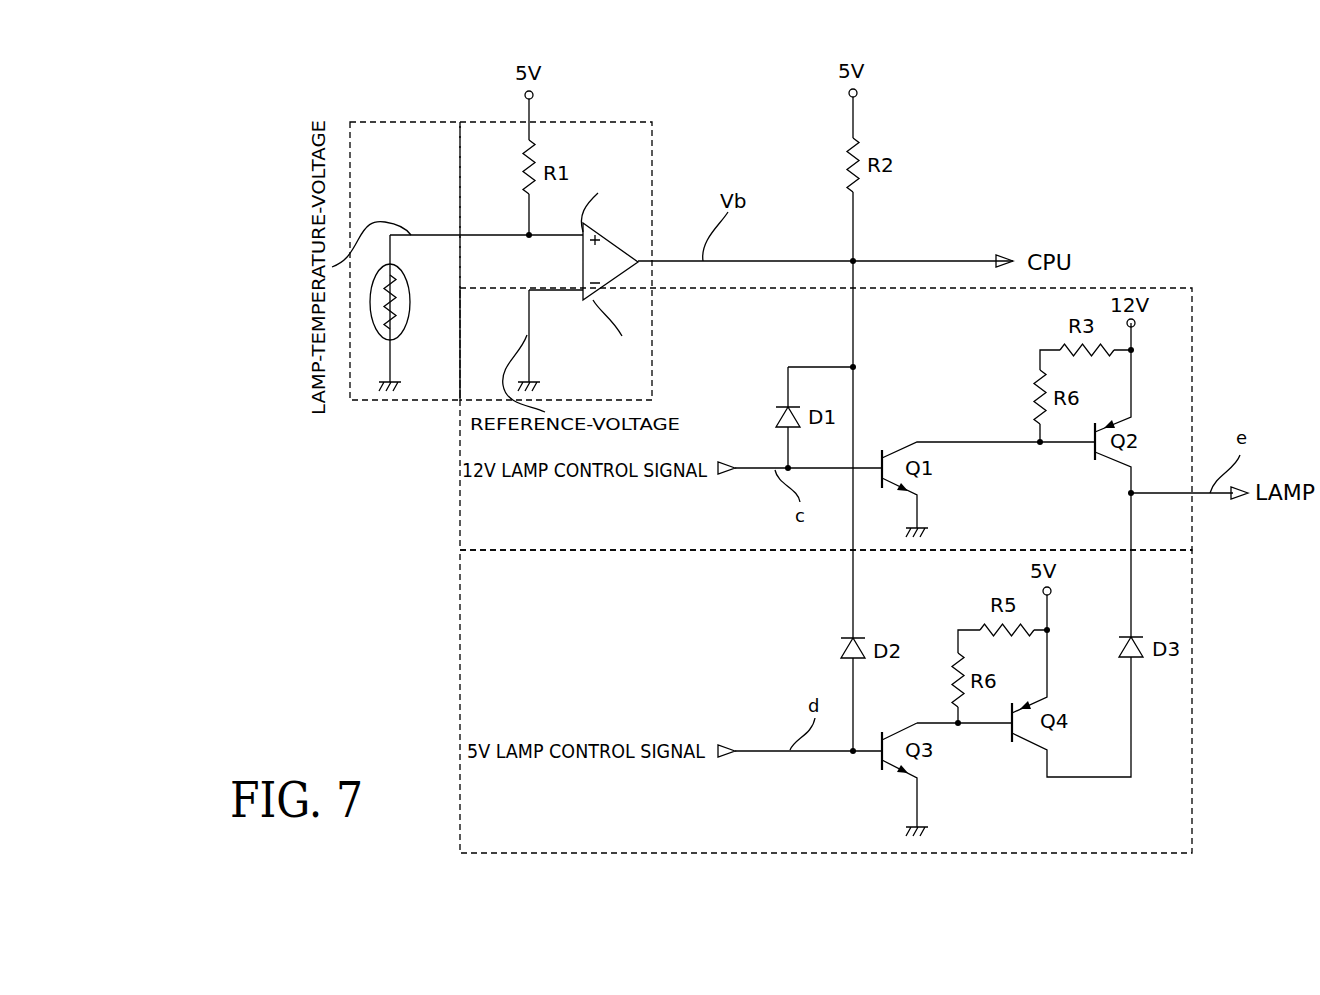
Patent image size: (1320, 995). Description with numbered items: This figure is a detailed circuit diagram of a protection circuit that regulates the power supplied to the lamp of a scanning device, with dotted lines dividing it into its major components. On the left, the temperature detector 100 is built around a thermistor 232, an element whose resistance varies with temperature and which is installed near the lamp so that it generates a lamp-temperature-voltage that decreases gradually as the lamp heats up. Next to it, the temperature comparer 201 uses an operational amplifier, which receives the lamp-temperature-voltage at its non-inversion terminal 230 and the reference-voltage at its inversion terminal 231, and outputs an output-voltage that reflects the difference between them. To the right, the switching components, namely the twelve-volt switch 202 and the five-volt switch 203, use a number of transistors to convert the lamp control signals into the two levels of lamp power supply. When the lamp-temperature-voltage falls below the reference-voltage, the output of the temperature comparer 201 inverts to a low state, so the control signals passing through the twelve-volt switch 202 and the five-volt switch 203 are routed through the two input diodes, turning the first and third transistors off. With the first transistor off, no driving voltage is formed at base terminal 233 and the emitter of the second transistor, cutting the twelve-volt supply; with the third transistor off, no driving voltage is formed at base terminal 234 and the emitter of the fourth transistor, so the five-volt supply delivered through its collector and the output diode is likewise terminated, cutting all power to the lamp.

The temperature detector 100 is at (389, 122).
The temperature comparer 201 is at (586, 122).
The 12 V switch 202 is at (1118, 288).
The 5 V switch 203 is at (1192, 713).
The non-inversion terminal 230 is at (583, 228).
The inversion terminal 231 is at (582, 300).
The thermistor 232 is at (388, 345).
The base terminal 233 is at (1065, 447).
The base terminal 234 is at (985, 726).